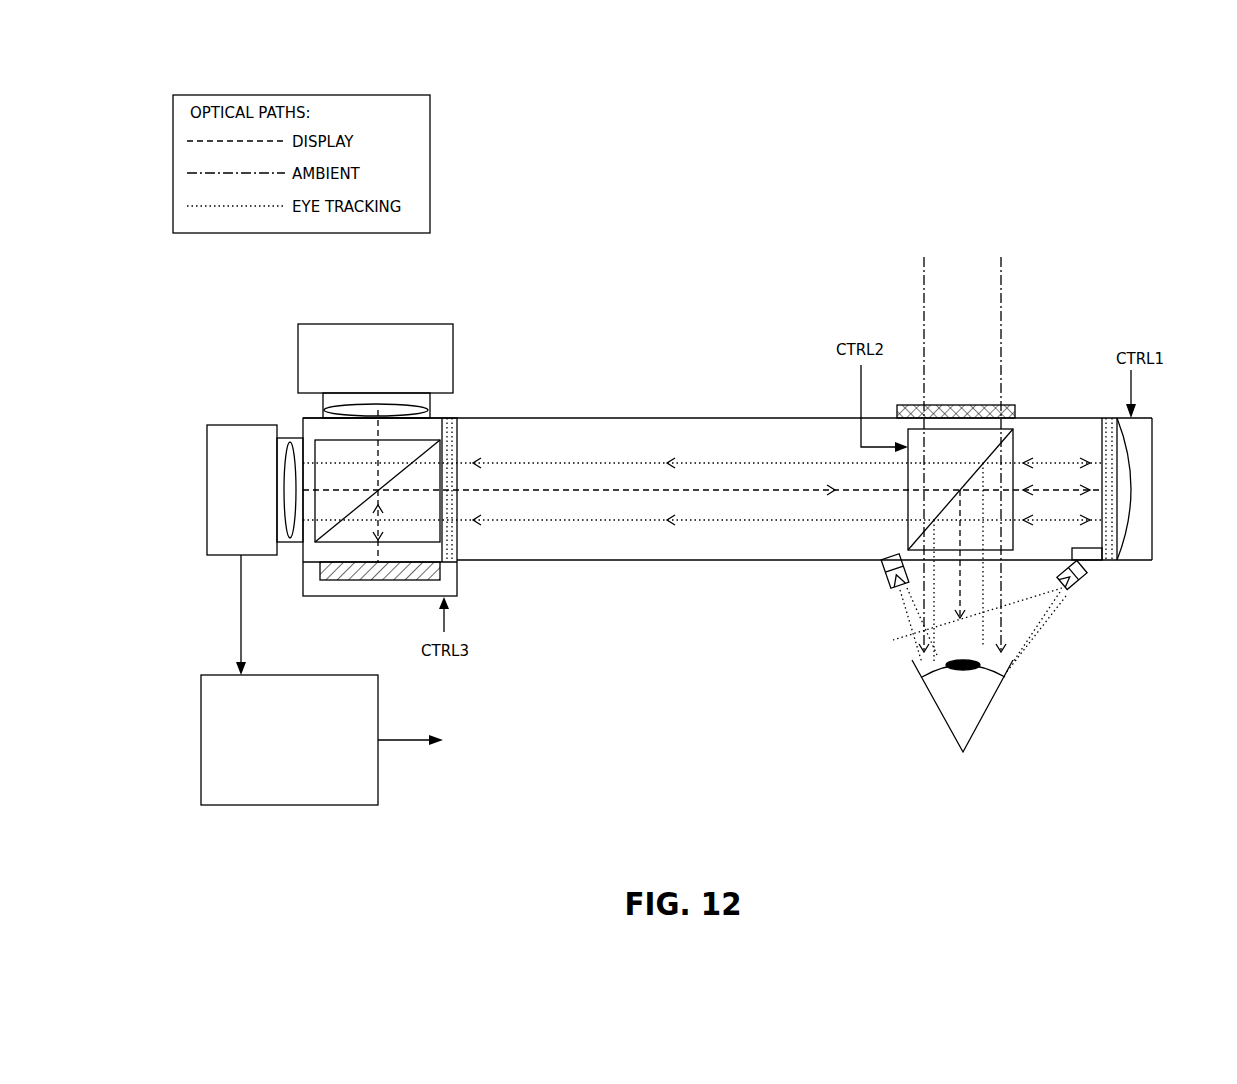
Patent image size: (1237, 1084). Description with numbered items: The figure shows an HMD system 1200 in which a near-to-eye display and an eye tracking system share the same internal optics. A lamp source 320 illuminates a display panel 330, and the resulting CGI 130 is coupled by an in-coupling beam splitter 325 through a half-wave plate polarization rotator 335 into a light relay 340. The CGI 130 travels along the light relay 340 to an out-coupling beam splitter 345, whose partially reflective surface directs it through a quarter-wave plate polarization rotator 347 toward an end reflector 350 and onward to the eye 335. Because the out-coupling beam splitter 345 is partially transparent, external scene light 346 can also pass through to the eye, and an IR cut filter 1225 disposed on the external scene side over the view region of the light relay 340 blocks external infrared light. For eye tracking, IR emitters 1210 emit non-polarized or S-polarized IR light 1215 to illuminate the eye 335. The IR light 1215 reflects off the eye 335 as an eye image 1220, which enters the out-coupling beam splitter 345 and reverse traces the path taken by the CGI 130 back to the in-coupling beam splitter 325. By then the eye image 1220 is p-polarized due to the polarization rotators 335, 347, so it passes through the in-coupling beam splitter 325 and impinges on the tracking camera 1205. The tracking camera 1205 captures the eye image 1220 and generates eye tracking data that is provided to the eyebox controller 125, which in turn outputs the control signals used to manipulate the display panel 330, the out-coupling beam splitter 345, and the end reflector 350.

The HMD system 1200 is at (876, 180).
The light relay 340 is at (527, 418).
The CGI 130 is at (722, 490).
The eye image 1220 is at (752, 523).
The lamp source 320 is at (375, 371).
The tracking camera 1205 is at (255, 550).
The in-coupling beam splitter 325 is at (380, 503).
The display panel 330 is at (355, 565).
The half-wave plate polarization rotator 335 is at (452, 568).
The eyebox controller 125 is at (328, 740).
The IR cut filter 1225 is at (913, 405).
The external scene light 346 is at (1001, 263).
The out-coupling beam splitter 345 is at (960, 489).
The quarter-wave plate polarization rotator 347 is at (1108, 432).
The end reflector 350 is at (1152, 442).
The IR emitters 1210 is at (885, 572).
The IR light 1215 is at (903, 613).